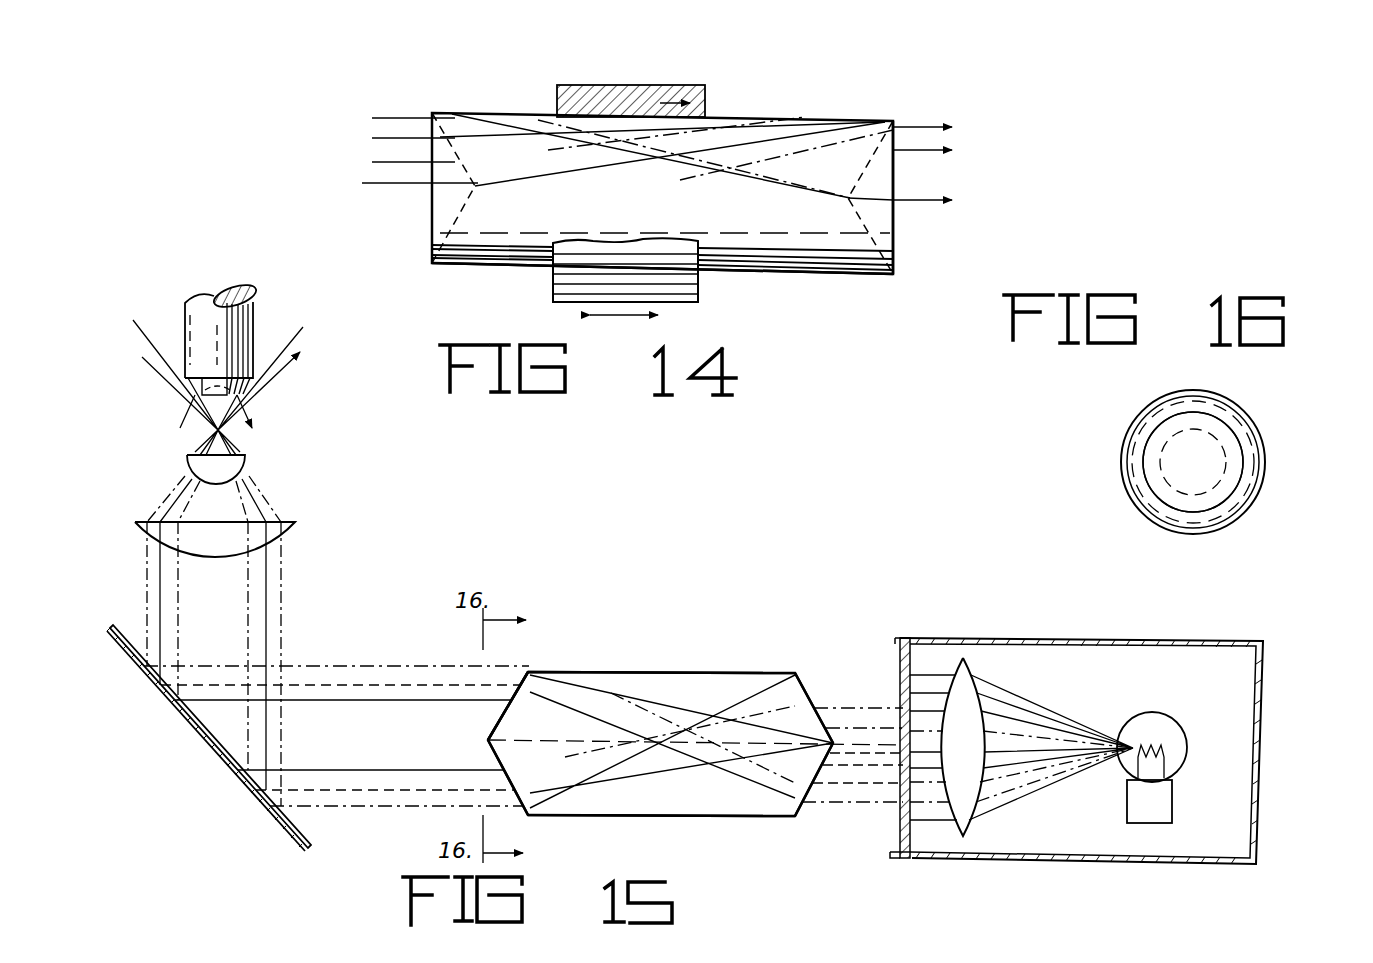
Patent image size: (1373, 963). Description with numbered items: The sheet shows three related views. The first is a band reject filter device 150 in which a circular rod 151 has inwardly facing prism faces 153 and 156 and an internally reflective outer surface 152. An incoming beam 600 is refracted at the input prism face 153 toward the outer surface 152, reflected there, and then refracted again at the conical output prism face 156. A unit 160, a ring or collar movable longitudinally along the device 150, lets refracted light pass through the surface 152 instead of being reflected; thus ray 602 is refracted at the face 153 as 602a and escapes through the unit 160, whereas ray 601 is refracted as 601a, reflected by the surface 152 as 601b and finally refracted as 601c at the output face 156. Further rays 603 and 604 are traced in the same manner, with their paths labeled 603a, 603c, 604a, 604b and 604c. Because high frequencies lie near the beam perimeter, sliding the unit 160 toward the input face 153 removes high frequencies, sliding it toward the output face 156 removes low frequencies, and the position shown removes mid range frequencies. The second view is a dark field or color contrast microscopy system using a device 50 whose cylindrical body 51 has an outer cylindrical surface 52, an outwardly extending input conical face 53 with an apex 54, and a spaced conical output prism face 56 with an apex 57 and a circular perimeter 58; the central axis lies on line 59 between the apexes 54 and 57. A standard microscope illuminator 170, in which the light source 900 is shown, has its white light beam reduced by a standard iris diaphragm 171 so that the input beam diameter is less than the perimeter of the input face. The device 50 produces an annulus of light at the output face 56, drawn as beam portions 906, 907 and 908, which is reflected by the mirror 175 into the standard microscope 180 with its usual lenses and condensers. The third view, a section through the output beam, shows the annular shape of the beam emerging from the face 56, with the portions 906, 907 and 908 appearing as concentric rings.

In FIG. 14, the device 150 is at (805, 84).
In FIG. 14, the circular rod 151 is at (850, 120).
In FIG. 14, the outer surface 152 is at (530, 271).
In FIG. 14, the input prism face 153 is at (425, 232).
In FIG. 14, the output prism face 156 is at (910, 230).
In FIG. 14, the unit 160 is at (623, 86).
In FIG. 14, the incoming beam 600 is at (269, 172).
In FIG. 14, the incoming ray 601 is at (372, 119).
In FIG. 14, the ray 602 is at (372, 140).
In FIG. 14, the third beam 603 is at (372, 163).
In FIG. 14, the fourth beam 604 is at (370, 185).
In FIG. 14, the refracted ray 601a is at (438, 115).
In FIG. 14, the reflected ray 601b is at (504, 118).
In FIG. 14, the refracted output ray 601c is at (950, 202).
In FIG. 14, the refracted ray 602a is at (540, 122).
In FIG. 14, the third beam internal portion 603a is at (718, 119).
In FIG. 14, the third beam output 603c is at (843, 143).
In FIG. 14, the fourth beam internal portion 604a is at (591, 176).
In FIG. 14, the fourth beam reflected portion 604b is at (893, 124).
In FIG. 14, the fourth beam output 604c is at (947, 121).
In FIG. 15, the microscope 180 is at (158, 452).
In FIG. 15, the mirror 175 is at (185, 722).
In FIG. 15, the central beam 906 is at (363, 702).
In FIG. 16, the central beam 906 is at (1221, 480).
In FIG. 15, the intermediate beam 907 is at (335, 789).
In FIG. 16, the intermediate beam 907 is at (1150, 440).
In FIG. 15, the outer beam 908 is at (348, 640).
In FIG. 16, the outer beam 908 is at (1127, 484).
In FIG. 15, the device 50 is at (700, 651).
In FIG. 16, the device 50 is at (1131, 524).
In FIG. 15, the cylindrical body 51 is at (693, 841).
In FIG. 16, the cylindrical body 51 is at (1263, 441).
In FIG. 15, the outer cylindrical surface 52 is at (603, 671).
In FIG. 15, the input conical face 53 is at (799, 672).
In FIG. 15, the apex 54 is at (829, 741).
In FIG. 15, the output prism face 56 is at (494, 721).
In FIG. 15, the apex 57 is at (486, 741).
In FIG. 15, the perimeter 58 is at (530, 671).
In FIG. 15, the line 59 is at (535, 742).
In FIG. 15, the microscope illuminator 170 is at (1280, 675).
In FIG. 15, the iris diaphragm 171 is at (899, 650).
In FIG. 15, the lamp and condenser lens 900 is at (927, 821).